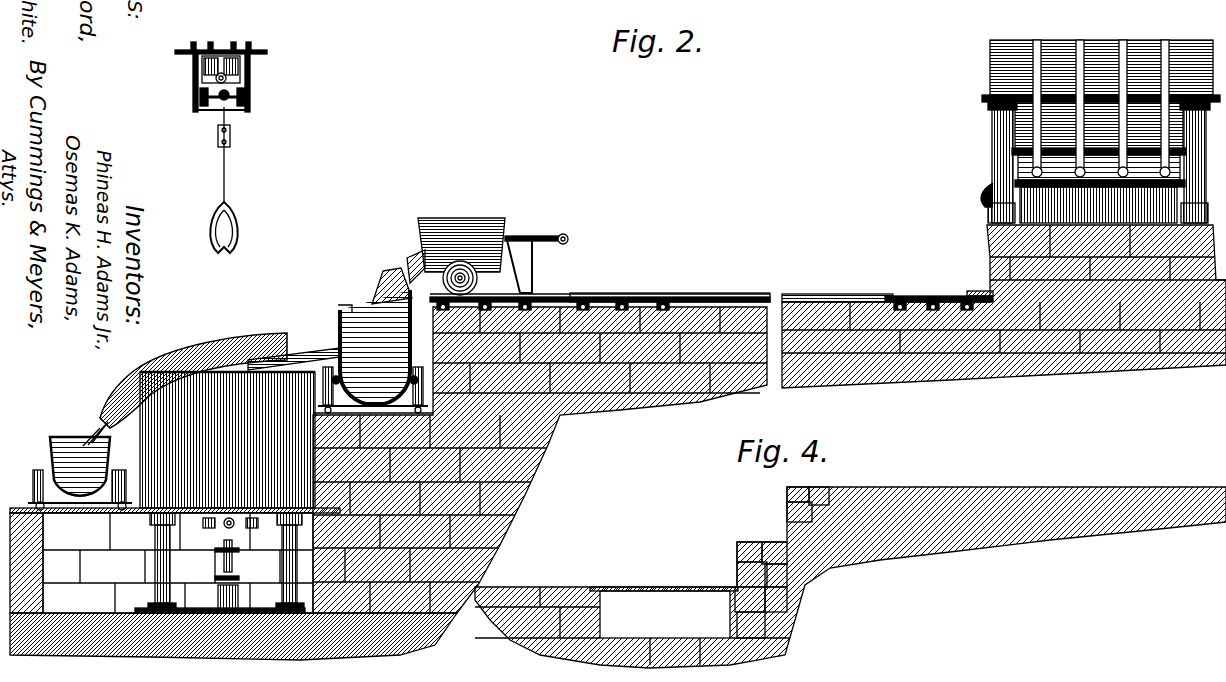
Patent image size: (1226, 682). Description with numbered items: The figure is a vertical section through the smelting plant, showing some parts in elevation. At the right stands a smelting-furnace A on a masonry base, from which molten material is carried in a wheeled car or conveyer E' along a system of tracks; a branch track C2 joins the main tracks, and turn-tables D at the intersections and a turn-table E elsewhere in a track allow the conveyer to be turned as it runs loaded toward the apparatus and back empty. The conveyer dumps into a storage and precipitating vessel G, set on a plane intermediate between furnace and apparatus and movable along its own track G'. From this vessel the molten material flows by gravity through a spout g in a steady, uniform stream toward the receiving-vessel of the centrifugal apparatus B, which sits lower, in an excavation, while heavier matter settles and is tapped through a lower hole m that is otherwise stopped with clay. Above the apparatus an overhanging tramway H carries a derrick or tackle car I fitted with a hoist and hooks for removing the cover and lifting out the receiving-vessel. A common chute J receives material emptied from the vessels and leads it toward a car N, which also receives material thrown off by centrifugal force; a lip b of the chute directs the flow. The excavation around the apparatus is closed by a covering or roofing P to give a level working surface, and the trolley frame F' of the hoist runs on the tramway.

In FIG. 2, the smelting-furnace A is at (1069, 131).
In FIG. 2, the centrifugal apparatus B is at (227, 440).
In FIG. 2, the branch track C2 is at (790, 290).
In FIG. 2, the turn-table D is at (928, 281).
In FIG. 2, the turn-table E is at (670, 280).
In FIG. 2, the car or conveyer E' is at (487, 243).
In FIG. 2, the trolley frame F' is at (236, 77).
In FIG. 2, the storage and precipitating vessel G is at (356, 336).
In FIG. 2, the track G' is at (373, 392).
In FIG. 2, the spout g is at (340, 347).
In FIG. 2, the overhanging tramway H is at (197, 98).
In FIG. 2, the derrick or tackle car I is at (228, 102).
In FIG. 2, the chute J is at (222, 338).
In FIG. 2, the lip of chute b is at (108, 423).
In FIG. 2, the hole or spout m is at (334, 378).
In FIG. 2, the car N is at (73, 437).
In FIG. 2, the covering or roofing P is at (127, 546).
In FIG. 4, the covering or roofing P is at (641, 588).